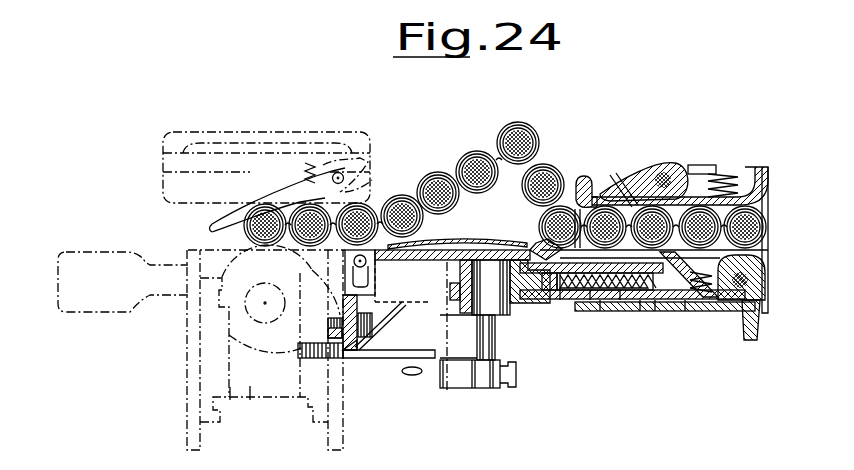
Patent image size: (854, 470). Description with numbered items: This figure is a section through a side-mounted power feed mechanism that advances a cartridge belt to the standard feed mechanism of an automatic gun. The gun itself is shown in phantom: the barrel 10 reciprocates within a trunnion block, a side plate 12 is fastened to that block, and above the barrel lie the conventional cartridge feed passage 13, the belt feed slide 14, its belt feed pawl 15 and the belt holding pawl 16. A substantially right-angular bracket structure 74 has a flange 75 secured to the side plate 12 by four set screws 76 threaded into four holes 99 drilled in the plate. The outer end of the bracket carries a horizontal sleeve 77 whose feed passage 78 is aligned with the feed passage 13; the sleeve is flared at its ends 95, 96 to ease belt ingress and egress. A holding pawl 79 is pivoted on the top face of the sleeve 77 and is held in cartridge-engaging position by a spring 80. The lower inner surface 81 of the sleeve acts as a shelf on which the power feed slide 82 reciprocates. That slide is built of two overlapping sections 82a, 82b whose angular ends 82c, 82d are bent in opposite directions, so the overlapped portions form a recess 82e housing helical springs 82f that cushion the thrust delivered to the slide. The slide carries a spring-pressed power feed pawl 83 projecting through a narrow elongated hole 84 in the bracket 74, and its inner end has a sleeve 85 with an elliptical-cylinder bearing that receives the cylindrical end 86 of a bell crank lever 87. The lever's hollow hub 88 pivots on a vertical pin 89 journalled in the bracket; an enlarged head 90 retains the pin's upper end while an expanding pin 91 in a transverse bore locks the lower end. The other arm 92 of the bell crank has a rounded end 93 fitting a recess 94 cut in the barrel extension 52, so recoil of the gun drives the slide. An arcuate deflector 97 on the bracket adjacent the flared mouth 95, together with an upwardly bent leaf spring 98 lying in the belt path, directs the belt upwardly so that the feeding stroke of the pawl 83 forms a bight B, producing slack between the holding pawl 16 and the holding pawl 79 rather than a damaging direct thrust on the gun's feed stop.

The barrel 10 is at (201, 333).
The side plate 12 is at (355, 441).
The cartridge feed passage 13 is at (366, 190).
The belt feed slide 14 is at (266, 167).
The belt feed pawl 15 is at (278, 197).
The belt holding pawl 16 is at (336, 254).
The barrel extension 52 is at (258, 413).
The bracket structure 74 is at (452, 276).
The flange 75 is at (354, 340).
The set screws 76 is at (372, 320).
The horizontal sleeve 77 is at (700, 320).
The feed passage 78 is at (628, 203).
The holding pawl 79 is at (640, 168).
The spring 80 is at (724, 173).
The lower inner surface 81 is at (638, 311).
The power feed slide 82 is at (530, 302).
The overlapping section 82a is at (600, 311).
The overlapping section 82b is at (655, 311).
The angular end 82c is at (685, 311).
The angular end 82d is at (560, 300).
The recess 82e is at (590, 300).
The helical springs 82f is at (620, 300).
The power feed pawl 83 is at (741, 297).
The elongated hole 84 is at (689, 274).
The sleeve 85 is at (458, 273).
The cylindrical end 86 is at (491, 287).
The bell crank lever 87 is at (462, 334).
The hollow hub 88 is at (495, 335).
The pin 89 is at (500, 353).
The enlarged head 90 is at (440, 250).
The expanding pin 91 is at (412, 376).
The arm 92 is at (390, 358).
The rounded end 93 is at (318, 358).
The recess 94 is at (300, 352).
The flared end 95 is at (582, 176).
The flared end 96 is at (768, 168).
The deflector 97 is at (540, 242).
The leaf spring 98 is at (480, 242).
The holes 99 is at (340, 315).
The bight B is at (526, 131).